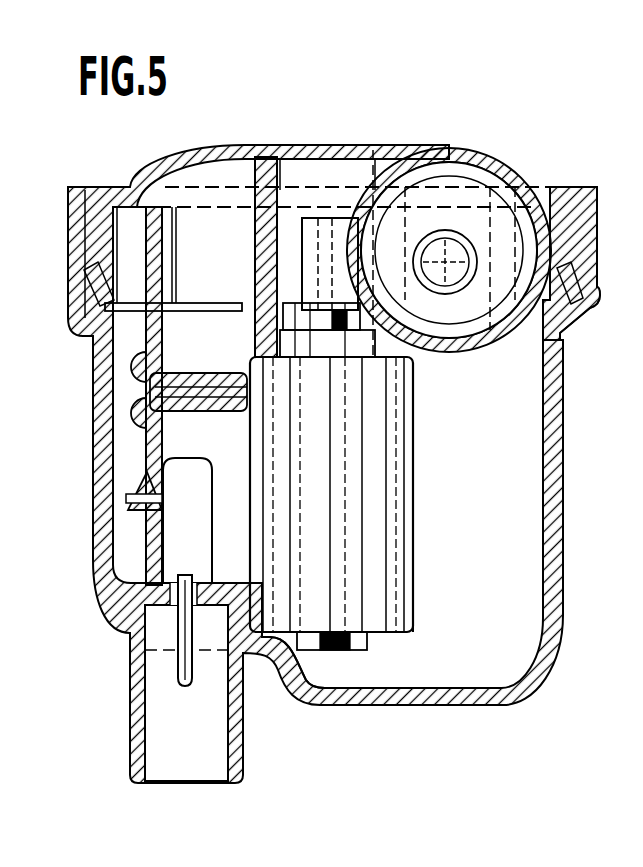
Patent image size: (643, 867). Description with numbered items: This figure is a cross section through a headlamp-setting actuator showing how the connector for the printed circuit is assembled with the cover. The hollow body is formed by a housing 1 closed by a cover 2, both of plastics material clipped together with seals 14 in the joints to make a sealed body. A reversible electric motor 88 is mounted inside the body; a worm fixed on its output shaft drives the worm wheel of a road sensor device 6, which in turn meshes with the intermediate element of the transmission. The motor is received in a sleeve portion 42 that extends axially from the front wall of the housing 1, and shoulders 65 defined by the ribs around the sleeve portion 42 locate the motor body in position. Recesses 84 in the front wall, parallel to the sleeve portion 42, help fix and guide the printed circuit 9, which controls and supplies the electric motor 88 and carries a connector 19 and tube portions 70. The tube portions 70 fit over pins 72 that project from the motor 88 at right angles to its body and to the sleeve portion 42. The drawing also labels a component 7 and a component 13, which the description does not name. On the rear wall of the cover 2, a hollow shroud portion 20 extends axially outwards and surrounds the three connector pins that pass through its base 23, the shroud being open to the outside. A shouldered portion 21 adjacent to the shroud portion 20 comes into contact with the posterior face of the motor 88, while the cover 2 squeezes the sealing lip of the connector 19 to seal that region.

The housing 1 is at (526, 165).
The cover 2 is at (408, 712).
The road sensor device 6 is at (470, 355).
The switch block 7 is at (318, 227).
The printed circuit 9 is at (140, 340).
The top plate 13 is at (385, 145).
The seals 14 is at (597, 288).
The connector 19 is at (185, 532).
The shroud portion 20 is at (130, 745).
The shouldered portion 21 is at (257, 656).
The base of the shroud 23 is at (155, 643).
The sleeve portion 42 is at (253, 237).
The shoulders 65 is at (262, 370).
The tube portions 70 is at (142, 458).
The pins 72 is at (140, 385).
The recesses 84 is at (138, 309).
The electric motor 88 is at (420, 598).